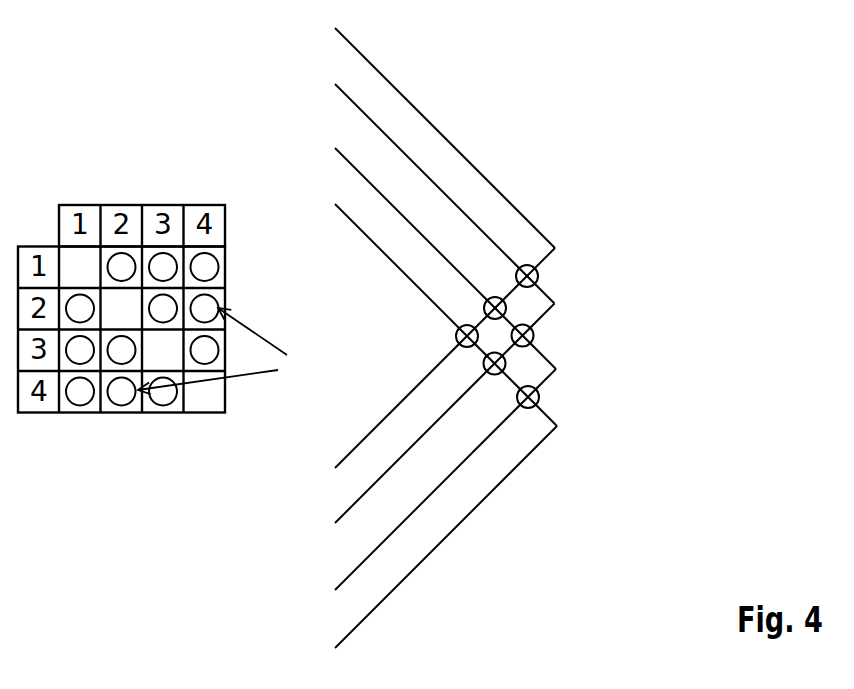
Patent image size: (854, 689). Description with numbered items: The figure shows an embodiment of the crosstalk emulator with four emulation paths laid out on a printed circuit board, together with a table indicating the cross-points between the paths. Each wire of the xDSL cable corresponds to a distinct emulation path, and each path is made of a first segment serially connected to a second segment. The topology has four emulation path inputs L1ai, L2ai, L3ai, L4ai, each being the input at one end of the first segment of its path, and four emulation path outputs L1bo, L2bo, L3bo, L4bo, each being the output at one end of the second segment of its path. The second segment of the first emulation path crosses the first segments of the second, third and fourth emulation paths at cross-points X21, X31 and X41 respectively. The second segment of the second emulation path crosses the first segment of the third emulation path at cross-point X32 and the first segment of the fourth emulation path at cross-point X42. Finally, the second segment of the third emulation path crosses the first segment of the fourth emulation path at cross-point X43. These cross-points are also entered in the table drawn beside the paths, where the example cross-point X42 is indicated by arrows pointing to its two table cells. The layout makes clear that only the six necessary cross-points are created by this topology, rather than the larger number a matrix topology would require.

The emulation path input L1ai is at (402, 132).
The emulation path input L2ai is at (402, 189).
The emulation path input L3ai is at (403, 250).
The emulation path input L4ai is at (403, 307).
The emulation path output L1bo is at (402, 362).
The emulation path output L2bo is at (402, 422).
The emulation path output L3bo is at (403, 486).
The emulation path output L4bo is at (403, 546).
The cross-point X21 is at (553, 273).
The cross-point X31 is at (483, 307).
The cross-point X41 is at (455, 335).
The cross-point X32 is at (543, 333).
The cross-point X42 is at (483, 364).
The cross-point X43 is at (550, 400).